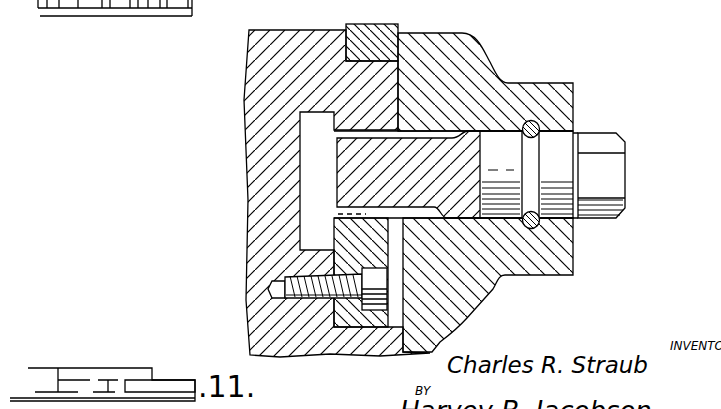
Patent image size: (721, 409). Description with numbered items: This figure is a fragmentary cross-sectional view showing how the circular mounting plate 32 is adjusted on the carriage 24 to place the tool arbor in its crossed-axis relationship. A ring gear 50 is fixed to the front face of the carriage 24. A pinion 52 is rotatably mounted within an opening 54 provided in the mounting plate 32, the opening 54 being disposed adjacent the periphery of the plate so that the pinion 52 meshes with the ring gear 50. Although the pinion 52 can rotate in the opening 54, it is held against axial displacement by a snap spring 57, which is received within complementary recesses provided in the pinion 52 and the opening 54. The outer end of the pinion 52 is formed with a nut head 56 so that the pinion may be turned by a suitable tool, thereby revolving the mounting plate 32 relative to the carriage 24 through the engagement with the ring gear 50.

The carriage 24 is at (302, 31).
The circular mounting plate 32 is at (475, 52).
The ring gear 50 is at (363, 228).
The pinion 52 is at (577, 134).
The opening 54 is at (455, 136).
The nut head 56 is at (627, 144).
The snap spring 57 is at (530, 130).